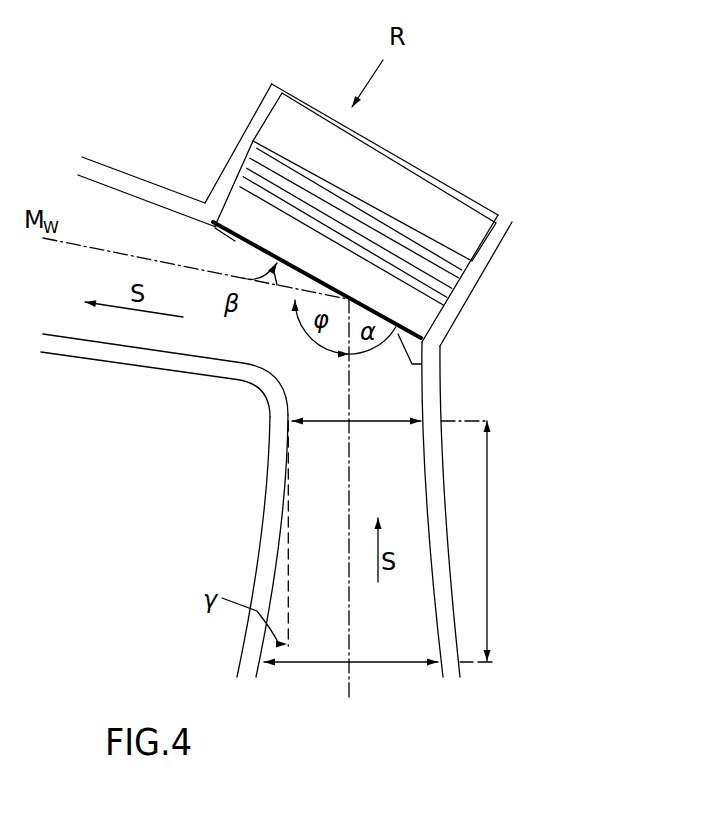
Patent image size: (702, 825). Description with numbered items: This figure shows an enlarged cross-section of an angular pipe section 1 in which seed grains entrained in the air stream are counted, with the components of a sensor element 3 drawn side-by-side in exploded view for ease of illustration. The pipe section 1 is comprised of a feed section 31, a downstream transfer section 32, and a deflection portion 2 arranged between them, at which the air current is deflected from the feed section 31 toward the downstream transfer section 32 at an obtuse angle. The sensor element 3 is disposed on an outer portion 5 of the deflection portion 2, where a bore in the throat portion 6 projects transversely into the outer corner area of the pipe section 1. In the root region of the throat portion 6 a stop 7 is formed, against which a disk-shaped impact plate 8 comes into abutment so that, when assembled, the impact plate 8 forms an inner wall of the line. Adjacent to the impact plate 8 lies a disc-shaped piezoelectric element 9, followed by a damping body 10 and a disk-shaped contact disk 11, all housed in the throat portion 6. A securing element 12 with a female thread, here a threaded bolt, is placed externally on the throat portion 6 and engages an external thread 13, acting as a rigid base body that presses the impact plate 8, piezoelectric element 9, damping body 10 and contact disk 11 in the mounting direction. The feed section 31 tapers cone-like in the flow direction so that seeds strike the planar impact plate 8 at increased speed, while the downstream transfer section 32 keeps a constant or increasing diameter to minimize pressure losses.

The pipe section 1 is at (113, 549).
The deflection portion 2 is at (230, 425).
The sensor element 3 is at (527, 253).
The outer portion 5 is at (488, 163).
The throat portion 6 is at (252, 133).
The stop 7 is at (213, 232).
The impact plate 8 is at (420, 326).
The piezoelectric element 9 is at (443, 303).
The damping body 10 is at (250, 177).
The contact disk 11 is at (458, 272).
The securing element 12 is at (383, 162).
The external thread 13 is at (230, 67).
The feed section 31 is at (250, 527).
The downstream transfer section 32 is at (150, 378).